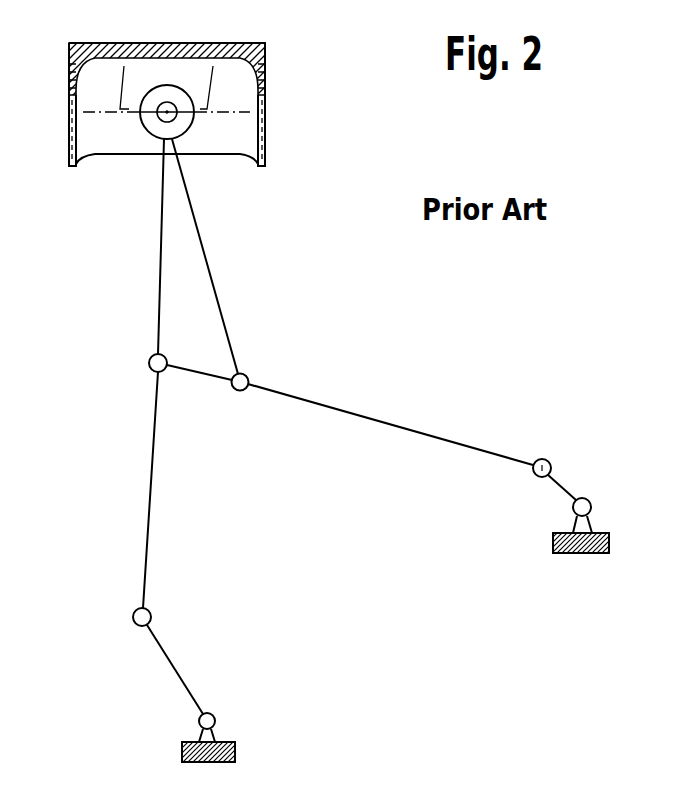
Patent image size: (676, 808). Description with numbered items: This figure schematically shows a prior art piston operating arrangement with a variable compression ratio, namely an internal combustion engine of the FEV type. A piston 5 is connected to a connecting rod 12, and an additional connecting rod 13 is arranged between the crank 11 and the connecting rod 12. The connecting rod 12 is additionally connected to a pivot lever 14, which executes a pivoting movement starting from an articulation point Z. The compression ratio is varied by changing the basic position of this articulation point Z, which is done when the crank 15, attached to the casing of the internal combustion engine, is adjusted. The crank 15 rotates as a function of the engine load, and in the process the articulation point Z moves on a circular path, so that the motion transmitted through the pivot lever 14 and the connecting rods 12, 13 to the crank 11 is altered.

The piston 5 is at (115, 114).
The crank 11 is at (175, 665).
The connecting rod 12 is at (205, 235).
The additional connecting rod 13 is at (150, 502).
The pivot lever 14 is at (357, 418).
The crank 15 is at (555, 482).
The articulation point Z is at (548, 462).